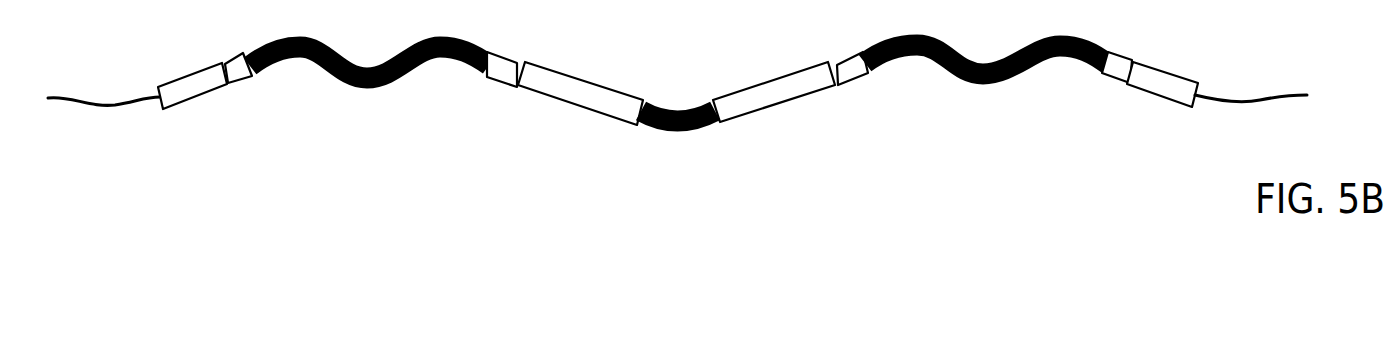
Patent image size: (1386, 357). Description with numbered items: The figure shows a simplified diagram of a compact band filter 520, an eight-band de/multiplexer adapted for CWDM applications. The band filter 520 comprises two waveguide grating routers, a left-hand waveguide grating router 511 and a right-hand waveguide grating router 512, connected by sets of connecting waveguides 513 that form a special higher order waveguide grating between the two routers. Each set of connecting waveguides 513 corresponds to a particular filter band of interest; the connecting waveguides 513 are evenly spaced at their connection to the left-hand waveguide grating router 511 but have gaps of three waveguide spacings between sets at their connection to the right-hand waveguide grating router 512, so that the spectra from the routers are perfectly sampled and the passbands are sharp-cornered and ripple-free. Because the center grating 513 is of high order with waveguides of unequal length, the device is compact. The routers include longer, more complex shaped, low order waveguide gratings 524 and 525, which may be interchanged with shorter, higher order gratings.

The left-hand waveguide grating router 511 is at (345, 136).
The right-hand waveguide grating router 512 is at (1010, 135).
The connecting waveguides (special higher order waveguide grating) 513 is at (680, 132).
The band filter 520 is at (677, 175).
The low order waveguide grating 524 is at (369, 103).
The low order waveguide grating 525 is at (987, 97).